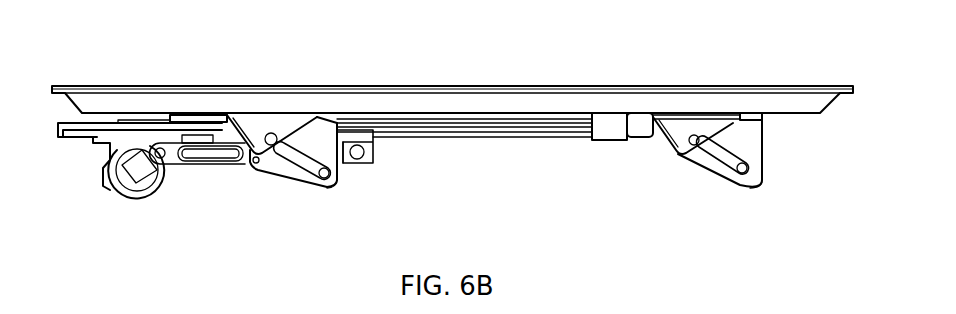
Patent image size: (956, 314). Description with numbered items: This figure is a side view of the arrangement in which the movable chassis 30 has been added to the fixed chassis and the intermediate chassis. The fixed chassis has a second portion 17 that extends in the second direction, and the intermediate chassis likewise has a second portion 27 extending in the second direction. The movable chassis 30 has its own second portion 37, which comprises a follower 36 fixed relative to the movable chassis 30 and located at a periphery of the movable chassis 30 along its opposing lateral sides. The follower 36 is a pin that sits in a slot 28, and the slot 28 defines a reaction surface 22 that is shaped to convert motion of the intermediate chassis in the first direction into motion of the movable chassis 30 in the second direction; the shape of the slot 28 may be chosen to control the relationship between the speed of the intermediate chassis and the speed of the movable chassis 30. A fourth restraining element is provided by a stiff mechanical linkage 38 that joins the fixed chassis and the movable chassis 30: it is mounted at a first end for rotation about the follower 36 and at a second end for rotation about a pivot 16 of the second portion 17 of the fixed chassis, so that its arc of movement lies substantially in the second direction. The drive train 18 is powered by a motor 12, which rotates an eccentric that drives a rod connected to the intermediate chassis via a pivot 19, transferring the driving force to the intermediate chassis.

The motor 12 is at (133, 194).
The pivot 16 is at (375, 162).
The second portion 17 is at (377, 147).
The drive train 18 is at (200, 165).
The pivot 19 is at (252, 163).
The reaction surface 22 is at (305, 150).
The second portion 27 is at (321, 188).
The slot 28 is at (283, 175).
The movable chassis 30 is at (488, 88).
The follower 36 is at (270, 130).
The second portion 37 is at (293, 135).
The mechanical linkage 38 is at (352, 166).